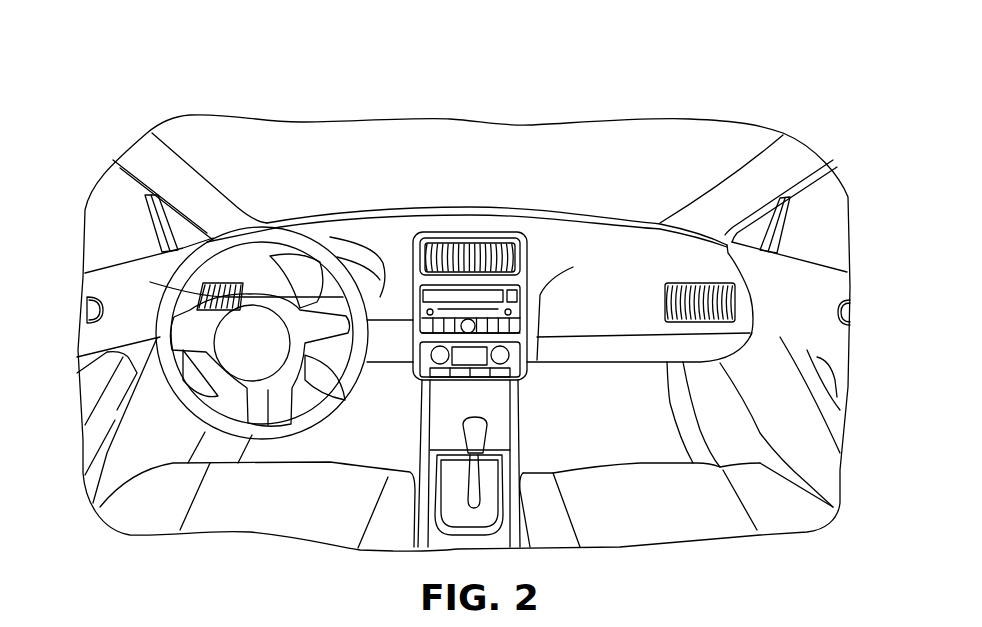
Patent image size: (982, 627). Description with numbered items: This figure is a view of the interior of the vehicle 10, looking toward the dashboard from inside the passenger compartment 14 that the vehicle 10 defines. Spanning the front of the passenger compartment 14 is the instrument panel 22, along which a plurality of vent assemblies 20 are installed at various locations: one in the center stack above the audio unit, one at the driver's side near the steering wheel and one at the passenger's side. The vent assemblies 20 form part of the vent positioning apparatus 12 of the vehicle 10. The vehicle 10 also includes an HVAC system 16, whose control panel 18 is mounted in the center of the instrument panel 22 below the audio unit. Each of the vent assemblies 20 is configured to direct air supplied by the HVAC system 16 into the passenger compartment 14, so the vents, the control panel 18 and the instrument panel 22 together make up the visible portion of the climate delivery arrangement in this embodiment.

The vehicle 10 is at (700, 92).
The vent positioning apparatus 12 is at (494, 236).
The passenger compartment 14 is at (318, 162).
The HVAC system 16 is at (507, 334).
The control panel 18 is at (508, 362).
The vent assemblies 20 is at (433, 257).
The instrument panel 22 is at (618, 258).